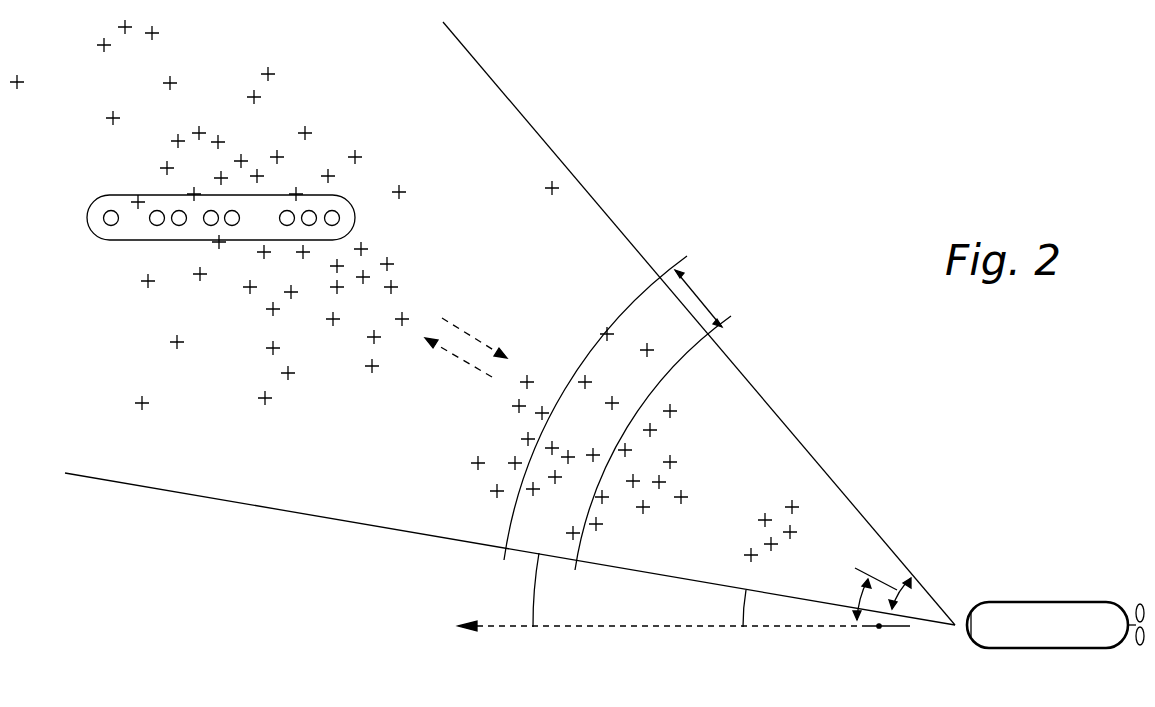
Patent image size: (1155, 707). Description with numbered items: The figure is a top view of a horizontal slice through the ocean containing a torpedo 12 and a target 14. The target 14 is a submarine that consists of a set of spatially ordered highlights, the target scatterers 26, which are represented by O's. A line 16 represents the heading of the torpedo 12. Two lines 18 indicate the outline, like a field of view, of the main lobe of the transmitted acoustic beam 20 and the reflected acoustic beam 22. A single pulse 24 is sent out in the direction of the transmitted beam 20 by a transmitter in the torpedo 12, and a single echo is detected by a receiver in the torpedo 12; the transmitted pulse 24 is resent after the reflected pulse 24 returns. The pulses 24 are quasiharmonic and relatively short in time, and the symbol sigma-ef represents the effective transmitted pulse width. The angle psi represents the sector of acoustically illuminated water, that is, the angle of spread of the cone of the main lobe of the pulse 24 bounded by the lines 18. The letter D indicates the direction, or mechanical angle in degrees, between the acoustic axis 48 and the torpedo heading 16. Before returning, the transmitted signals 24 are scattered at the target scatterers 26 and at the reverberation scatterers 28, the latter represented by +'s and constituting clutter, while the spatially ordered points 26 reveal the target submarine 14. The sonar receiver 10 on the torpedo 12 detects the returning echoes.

The sonar receiver on submarine 10 is at (966, 622).
The torpedo 12 is at (1068, 602).
The target 14 is at (350, 200).
The heading line 16 is at (868, 629).
The outline lines 18 is at (498, 87).
The transmitted acoustic beam 20 is at (496, 340).
The reflected acoustic beam 22 is at (443, 365).
The pulse 24 is at (718, 288).
The target scatterers 26 is at (332, 224).
The reverberation scatterers 28 is at (310, 127).
The acoustic axis 48 is at (890, 587).